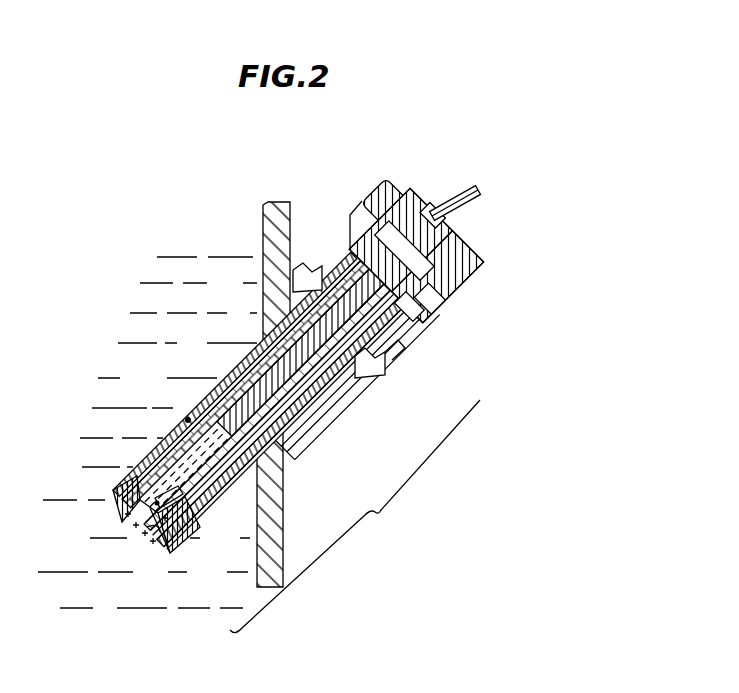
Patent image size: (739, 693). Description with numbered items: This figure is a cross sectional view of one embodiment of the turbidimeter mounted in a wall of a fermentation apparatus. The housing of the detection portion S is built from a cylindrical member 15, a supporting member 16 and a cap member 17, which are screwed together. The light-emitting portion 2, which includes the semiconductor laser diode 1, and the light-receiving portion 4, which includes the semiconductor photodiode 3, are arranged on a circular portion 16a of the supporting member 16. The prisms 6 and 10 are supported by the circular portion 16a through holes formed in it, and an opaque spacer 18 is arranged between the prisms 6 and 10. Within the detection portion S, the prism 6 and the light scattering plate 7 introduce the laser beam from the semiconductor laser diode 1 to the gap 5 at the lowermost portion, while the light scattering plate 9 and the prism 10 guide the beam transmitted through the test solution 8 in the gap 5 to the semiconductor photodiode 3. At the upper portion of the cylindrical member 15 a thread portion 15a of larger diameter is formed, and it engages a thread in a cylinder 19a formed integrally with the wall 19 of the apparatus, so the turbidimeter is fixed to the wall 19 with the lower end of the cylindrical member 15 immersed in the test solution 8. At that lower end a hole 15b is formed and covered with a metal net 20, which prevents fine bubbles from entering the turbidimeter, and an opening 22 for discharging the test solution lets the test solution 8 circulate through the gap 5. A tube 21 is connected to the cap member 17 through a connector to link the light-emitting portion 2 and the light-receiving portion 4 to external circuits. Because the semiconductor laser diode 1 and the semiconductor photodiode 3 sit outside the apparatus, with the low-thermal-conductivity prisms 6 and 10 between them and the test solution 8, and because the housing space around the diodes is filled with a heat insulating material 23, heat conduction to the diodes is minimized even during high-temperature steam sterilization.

The semiconductor laser diode 1 is at (350, 223).
The light-emitting portion 2 is at (402, 226).
The semiconductor photodiode 3 is at (437, 300).
The light-receiving portion 4 is at (440, 252).
The gap 5 is at (157, 517).
The prism 6 is at (232, 398).
The light scattering plate 7 is at (157, 503).
The test solution 8 is at (153, 540).
The light scattering plate 9 is at (187, 533).
The prism 10 is at (291, 381).
The cylindrical member 15 is at (257, 345).
The thread portion 15a is at (358, 377).
The hole 15b is at (135, 527).
The supporting member 16 is at (410, 320).
The circular portion 16a is at (400, 340).
The cap member 17 is at (473, 278).
The opaque spacer 18 is at (267, 425).
The wall 19 is at (277, 498).
The cylinder 19a is at (347, 397).
The net 20 is at (130, 520).
The tube 21 is at (463, 192).
The opening 22 is at (187, 420).
The heat insulating material 23 is at (386, 205).
The detection portion S is at (355, 516).